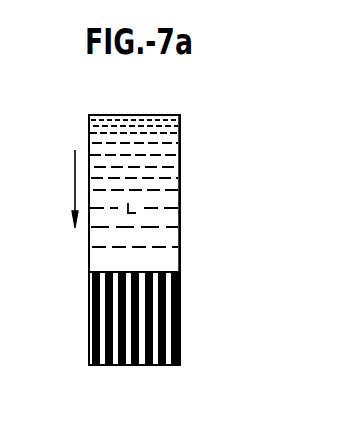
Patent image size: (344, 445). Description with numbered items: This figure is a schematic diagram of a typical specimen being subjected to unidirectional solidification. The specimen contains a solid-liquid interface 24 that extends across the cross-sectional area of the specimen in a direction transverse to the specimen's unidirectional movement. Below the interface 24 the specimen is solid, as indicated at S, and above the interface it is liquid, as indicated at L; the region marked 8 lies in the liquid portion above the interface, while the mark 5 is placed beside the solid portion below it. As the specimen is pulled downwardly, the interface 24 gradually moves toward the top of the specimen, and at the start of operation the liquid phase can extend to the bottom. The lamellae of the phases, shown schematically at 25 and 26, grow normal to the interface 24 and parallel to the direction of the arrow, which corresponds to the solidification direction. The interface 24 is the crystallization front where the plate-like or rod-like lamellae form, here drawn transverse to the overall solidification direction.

The composite body 5 is at (75, 270).
The dispersed particle region 8 is at (172, 202).
The solid-liquid interface 24 is at (165, 268).
The lamella of one phase 25 is at (178, 293).
The lamella of the other phase 26 is at (173, 330).